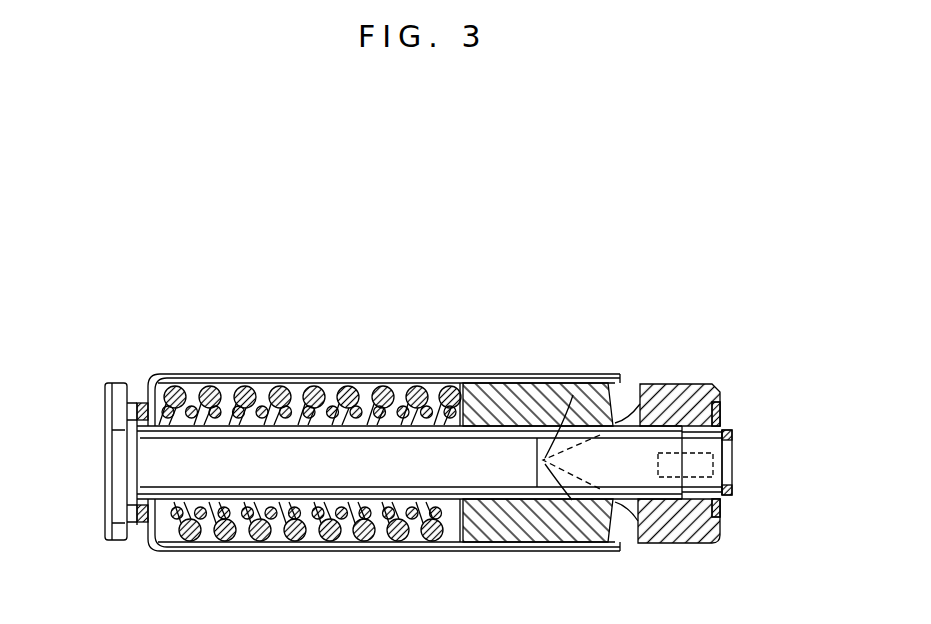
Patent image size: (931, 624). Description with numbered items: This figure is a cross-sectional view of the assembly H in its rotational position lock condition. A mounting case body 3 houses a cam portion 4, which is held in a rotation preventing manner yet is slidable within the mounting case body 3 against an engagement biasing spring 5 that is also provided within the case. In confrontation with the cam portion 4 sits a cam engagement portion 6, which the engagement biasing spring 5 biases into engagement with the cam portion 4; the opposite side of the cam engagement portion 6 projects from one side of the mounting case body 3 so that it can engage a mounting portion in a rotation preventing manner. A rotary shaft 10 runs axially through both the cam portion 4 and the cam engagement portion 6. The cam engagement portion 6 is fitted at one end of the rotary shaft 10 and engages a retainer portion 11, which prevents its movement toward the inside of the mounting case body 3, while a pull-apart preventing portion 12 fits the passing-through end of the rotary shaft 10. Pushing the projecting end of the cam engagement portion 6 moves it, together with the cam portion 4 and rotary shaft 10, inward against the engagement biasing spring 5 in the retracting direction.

The mounting case body 3 is at (363, 376).
The cam portion 4 is at (535, 397).
The engagement biasing spring 5 is at (280, 394).
The cam engagement portion 6 is at (661, 392).
The rotary shaft 10 is at (213, 457).
The retainer portion 11 is at (712, 398).
The pull-apart preventing portion 12 is at (730, 432).
The hammer assembly H is at (431, 304).